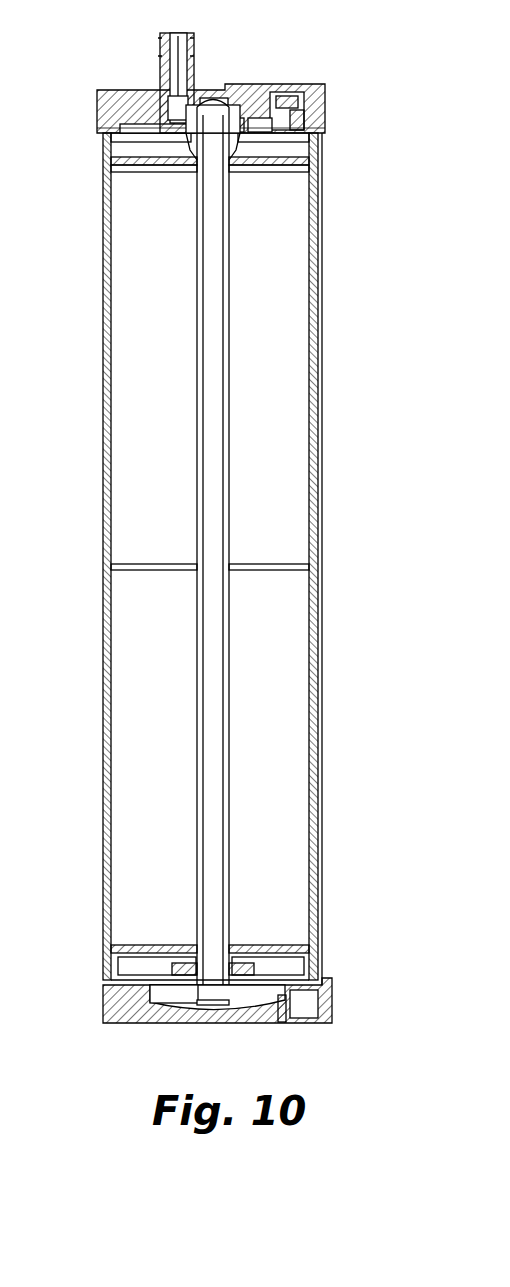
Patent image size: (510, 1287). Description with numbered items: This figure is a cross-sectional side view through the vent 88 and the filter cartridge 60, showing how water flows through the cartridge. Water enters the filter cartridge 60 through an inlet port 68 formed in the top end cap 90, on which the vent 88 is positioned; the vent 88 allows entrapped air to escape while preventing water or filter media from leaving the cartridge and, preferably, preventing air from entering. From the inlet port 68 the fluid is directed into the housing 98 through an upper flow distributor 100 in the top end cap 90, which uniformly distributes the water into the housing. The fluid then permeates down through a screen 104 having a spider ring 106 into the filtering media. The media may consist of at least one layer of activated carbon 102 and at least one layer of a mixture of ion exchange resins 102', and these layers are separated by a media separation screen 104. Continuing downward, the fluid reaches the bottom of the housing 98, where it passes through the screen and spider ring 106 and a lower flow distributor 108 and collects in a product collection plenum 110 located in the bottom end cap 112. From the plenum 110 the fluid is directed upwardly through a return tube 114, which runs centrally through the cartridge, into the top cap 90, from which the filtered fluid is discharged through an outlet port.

The filter cartridge 60 is at (102, 657).
The inlet port 68 is at (166, 55).
The vent device 88 is at (326, 124).
The top end cap 90 is at (100, 92).
The housing 98 is at (105, 265).
The upper flow distributor 100 is at (247, 116).
The activated carbon 102 is at (249, 368).
The mixture of ion exchange resins 102' is at (251, 757).
The screen 104 is at (321, 191).
The spider ring 106 is at (268, 158).
The lower flow distributor 108 is at (178, 990).
The product collection plenum 110 is at (233, 1003).
The bottom end cap 112 is at (333, 1017).
The return tube 114 is at (198, 775).